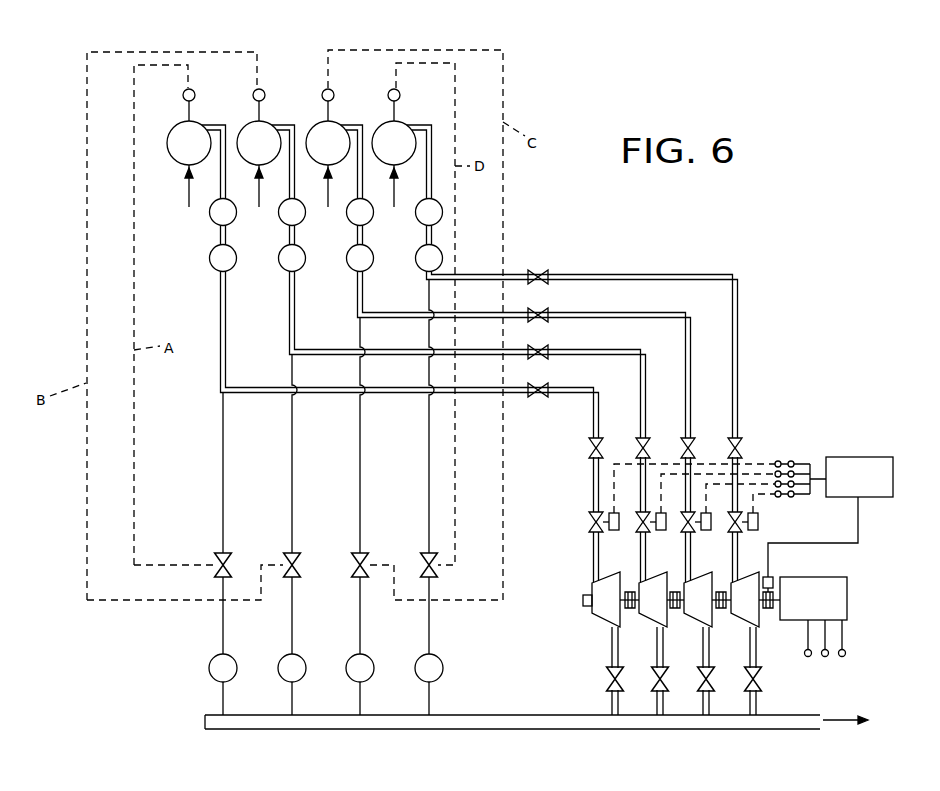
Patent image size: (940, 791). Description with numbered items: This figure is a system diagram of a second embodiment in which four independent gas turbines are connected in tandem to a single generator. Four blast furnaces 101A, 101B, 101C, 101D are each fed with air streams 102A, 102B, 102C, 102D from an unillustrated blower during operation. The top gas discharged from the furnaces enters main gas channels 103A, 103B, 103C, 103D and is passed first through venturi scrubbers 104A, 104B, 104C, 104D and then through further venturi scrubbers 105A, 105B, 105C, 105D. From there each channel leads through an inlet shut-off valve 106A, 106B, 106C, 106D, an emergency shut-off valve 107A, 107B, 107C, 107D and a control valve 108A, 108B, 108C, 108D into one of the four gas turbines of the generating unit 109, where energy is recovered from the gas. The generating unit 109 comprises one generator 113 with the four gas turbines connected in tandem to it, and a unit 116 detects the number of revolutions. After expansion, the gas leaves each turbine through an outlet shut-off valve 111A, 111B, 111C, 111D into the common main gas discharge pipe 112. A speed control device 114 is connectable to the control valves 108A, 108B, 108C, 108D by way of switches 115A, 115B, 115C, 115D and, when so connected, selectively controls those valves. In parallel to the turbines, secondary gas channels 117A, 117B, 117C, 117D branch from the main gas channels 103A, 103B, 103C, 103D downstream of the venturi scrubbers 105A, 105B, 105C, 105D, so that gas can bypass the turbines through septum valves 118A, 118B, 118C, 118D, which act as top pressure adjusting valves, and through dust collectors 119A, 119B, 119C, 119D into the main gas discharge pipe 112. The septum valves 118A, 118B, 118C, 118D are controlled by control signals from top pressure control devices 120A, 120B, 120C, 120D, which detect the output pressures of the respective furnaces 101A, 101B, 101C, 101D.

The blast furnace 101A is at (189, 143).
The blast furnace 101B is at (259, 143).
The blast furnace 101C is at (328, 143).
The blast furnace 101D is at (394, 143).
The air stream 102A is at (184, 200).
The air stream 102B is at (258, 200).
The air stream 102C is at (328, 200).
The air stream 102D is at (398, 200).
The main gas channel 103A is at (225, 372).
The main gas channel 103B is at (295, 340).
The main gas channel 103C is at (363, 305).
The main gas channel 103D is at (468, 275).
The venturi scrubber 104A is at (219, 175).
The venturi scrubber 104B is at (289, 175).
The venturi scrubber 104C is at (357, 175).
The venturi scrubber 104D is at (425, 175).
The venturi scrubber 105A is at (223, 249).
The venturi scrubber 105B is at (292, 249).
The venturi scrubber 105C is at (360, 249).
The venturi scrubber 105D is at (429, 249).
The inlet shut-off valve 106A is at (536, 397).
The inlet shut-off valve 106B is at (536, 359).
The inlet shut-off valve 106C is at (536, 322).
The inlet shut-off valve 106D is at (536, 284).
The emergency shut-off valve 107A is at (591, 449).
The emergency shut-off valve 107B is at (635, 442).
The emergency shut-off valve 107C is at (696, 446).
The emergency shut-off valve 107D is at (742, 446).
The control valve 108A is at (600, 527).
The control valve 108B is at (647, 527).
The control valve 108C is at (692, 527).
The control valve 108D is at (739, 527).
The generating unit 109 is at (768, 614).
The outlet shut-off valve 111A is at (604, 680).
The outlet shut-off valve 111B is at (652, 676).
The outlet shut-off valve 111C is at (698, 676).
The outlet shut-off valve 111D is at (745, 676).
The main gas discharge pipe 112 is at (598, 727).
The generator 113 is at (847, 600).
The speed control device 114 is at (869, 488).
The switch 115A is at (779, 461).
The switch 115B is at (793, 462).
The switch 115C is at (777, 497).
The switch 115D is at (793, 497).
The unit for detecting the number of revolutions 116 is at (775, 578).
The secondary gas channel 117A is at (225, 477).
The secondary gas channel 117B is at (294, 478).
The secondary gas channel 117C is at (362, 478).
The secondary gas channel 117D is at (428, 412).
The septum valve 118A is at (228, 553).
The septum valve 118B is at (297, 553).
The septum valve 118C is at (365, 553).
The septum valve 118D is at (422, 530).
The dust collector 119A is at (223, 684).
The dust collector 119B is at (292, 684).
The dust collector 119C is at (360, 684).
The dust collector 119D is at (429, 684).
The top pressure control device 120A is at (195, 94).
The top pressure control device 120B is at (265, 94).
The top pressure control device 120C is at (334, 94).
The top pressure control device 120D is at (400, 94).